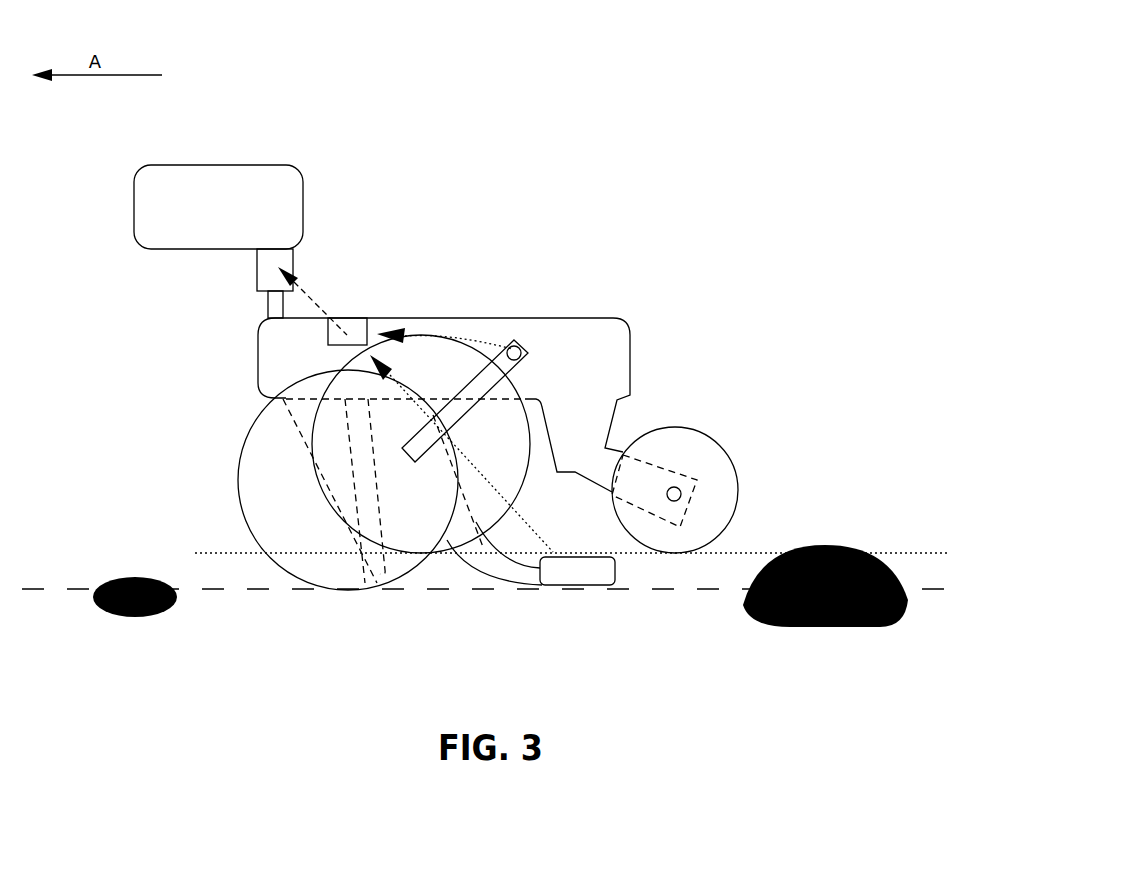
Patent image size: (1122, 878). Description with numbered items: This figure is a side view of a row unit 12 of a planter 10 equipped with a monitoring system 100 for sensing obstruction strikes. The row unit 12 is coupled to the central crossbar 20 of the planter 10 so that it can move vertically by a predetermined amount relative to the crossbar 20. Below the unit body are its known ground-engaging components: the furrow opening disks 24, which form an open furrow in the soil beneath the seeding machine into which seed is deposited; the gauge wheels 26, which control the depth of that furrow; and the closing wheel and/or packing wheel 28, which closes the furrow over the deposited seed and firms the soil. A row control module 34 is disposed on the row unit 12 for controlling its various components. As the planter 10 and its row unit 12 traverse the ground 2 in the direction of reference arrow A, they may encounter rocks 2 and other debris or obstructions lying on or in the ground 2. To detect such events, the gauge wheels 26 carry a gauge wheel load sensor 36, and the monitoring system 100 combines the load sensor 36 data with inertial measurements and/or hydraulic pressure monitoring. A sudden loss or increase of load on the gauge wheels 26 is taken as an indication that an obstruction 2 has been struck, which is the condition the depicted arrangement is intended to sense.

The rocks 2 is at (123, 618).
The planter 10 is at (748, 78).
The row unit 12 is at (797, 117).
The monitoring system 100 is at (836, 158).
The central crossbar 20 is at (217, 165).
The furrow opening disks 24 is at (302, 563).
The gauge wheels 26 is at (448, 543).
The closing wheel and/or packing wheel 28 is at (730, 488).
The row control module 34 is at (293, 265).
The gauge wheel load sensor 36 is at (516, 340).